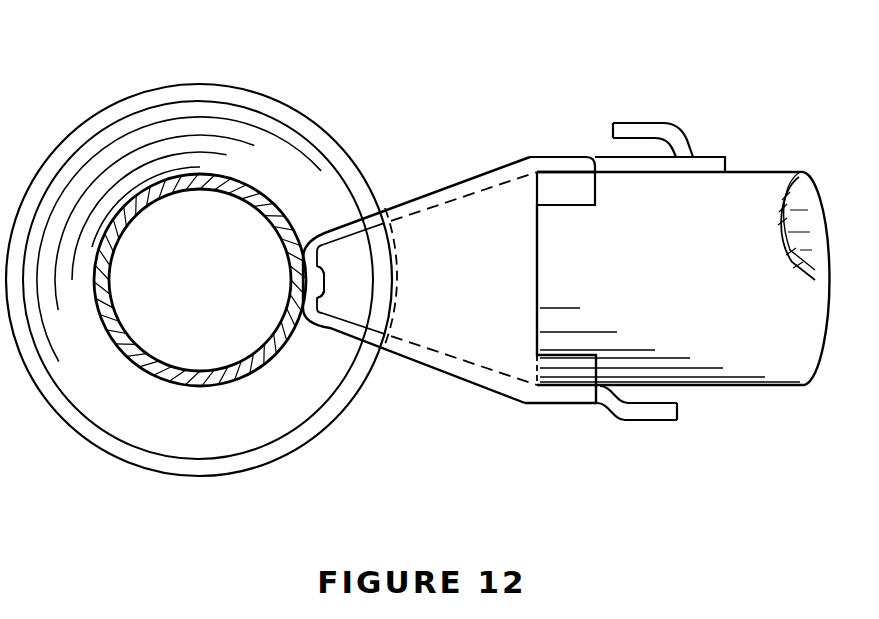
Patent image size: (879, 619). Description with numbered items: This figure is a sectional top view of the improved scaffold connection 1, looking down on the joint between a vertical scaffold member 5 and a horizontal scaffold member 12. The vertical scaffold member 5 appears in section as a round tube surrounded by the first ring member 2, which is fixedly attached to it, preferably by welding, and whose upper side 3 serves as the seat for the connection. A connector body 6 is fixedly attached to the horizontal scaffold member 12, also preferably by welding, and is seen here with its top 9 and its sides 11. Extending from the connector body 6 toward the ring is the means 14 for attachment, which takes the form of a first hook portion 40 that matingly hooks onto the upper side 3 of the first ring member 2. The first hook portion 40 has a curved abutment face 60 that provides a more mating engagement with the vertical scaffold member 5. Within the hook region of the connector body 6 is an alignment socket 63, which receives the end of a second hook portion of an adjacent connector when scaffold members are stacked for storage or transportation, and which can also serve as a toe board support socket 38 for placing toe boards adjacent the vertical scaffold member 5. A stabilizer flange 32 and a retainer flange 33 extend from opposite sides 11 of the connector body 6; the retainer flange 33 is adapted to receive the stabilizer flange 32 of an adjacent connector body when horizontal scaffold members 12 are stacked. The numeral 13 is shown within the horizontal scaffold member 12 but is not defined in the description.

The scaffold connection 1 is at (415, 100).
The first ring member 2 is at (274, 88).
The upper side 3 is at (176, 114).
The vertical scaffold member 5 is at (213, 175).
The connector body 6 is at (475, 291).
The top 9 is at (556, 190).
The sides 11 is at (602, 157).
The horizontal scaffold member 12 is at (683, 253).
The pipe interior 13 is at (673, 294).
The means for attachment 14 is at (328, 350).
The stabilizer flange 32 is at (656, 123).
The retainer flange 33 is at (640, 422).
The toe board support socket 38 is at (347, 283).
The first hook portion 40 is at (326, 214).
The curved abutment face 60 is at (304, 283).
The alignment socket 63 is at (347, 283).